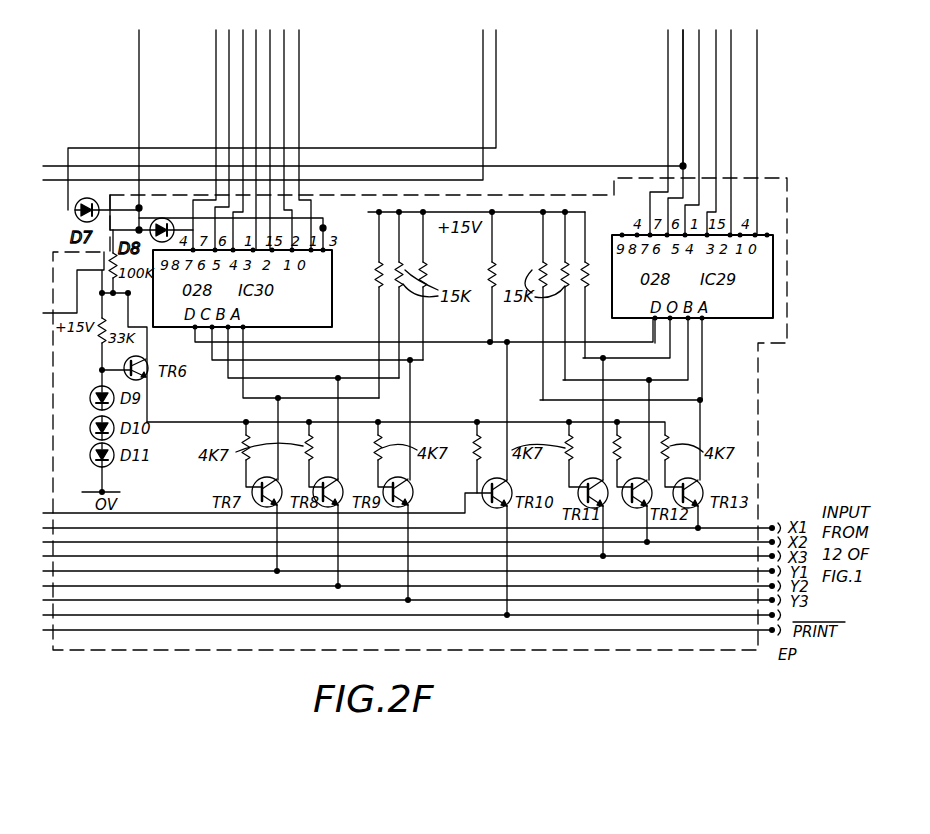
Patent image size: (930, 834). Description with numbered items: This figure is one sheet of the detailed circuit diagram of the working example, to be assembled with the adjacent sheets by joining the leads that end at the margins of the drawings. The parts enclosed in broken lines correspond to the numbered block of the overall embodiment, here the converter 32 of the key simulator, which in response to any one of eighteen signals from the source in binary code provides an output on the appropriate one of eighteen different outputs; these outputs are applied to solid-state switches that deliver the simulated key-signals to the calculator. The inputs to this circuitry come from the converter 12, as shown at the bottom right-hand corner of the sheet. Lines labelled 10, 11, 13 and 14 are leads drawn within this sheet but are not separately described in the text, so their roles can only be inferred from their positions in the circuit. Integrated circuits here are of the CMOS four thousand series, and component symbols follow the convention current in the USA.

The output line of decoder IC29 10 is at (704, 322).
The output line of decoder IC29 11 is at (644, 330).
The converter 12 is at (672, 322).
The output line of decoder IC29 13 is at (690, 322).
The input line to decoder IC30 14 is at (325, 228).
The converter 32 is at (762, 387).